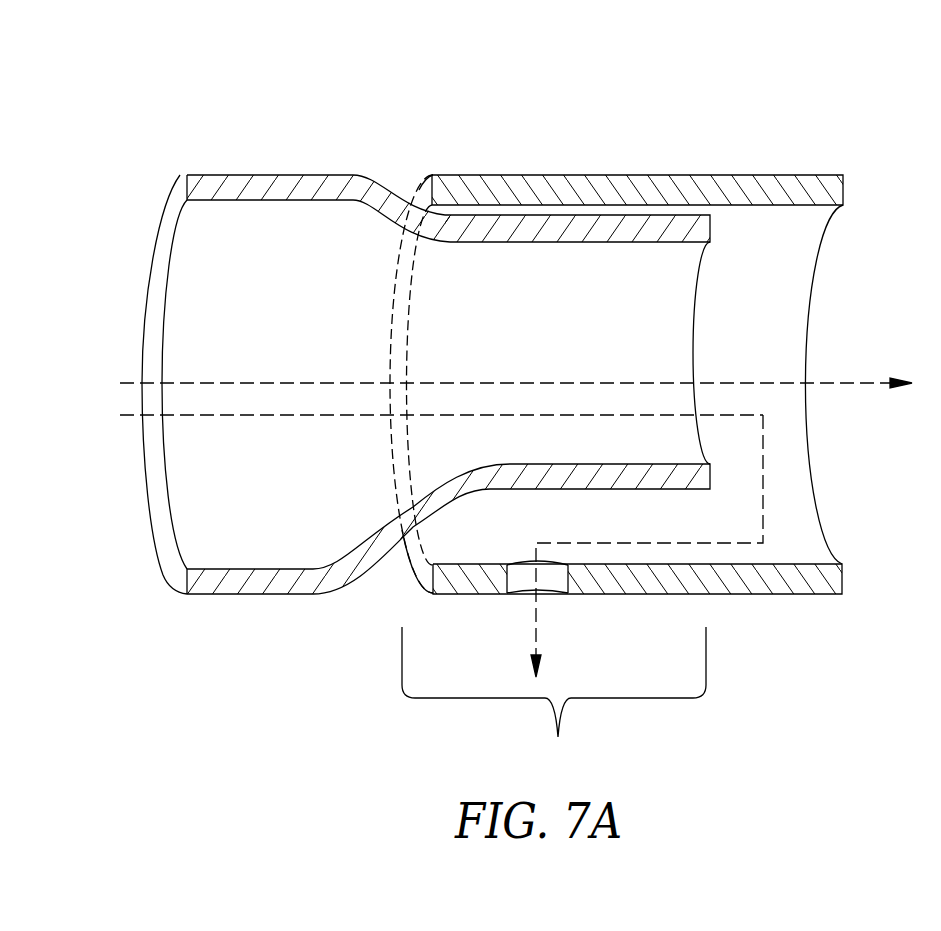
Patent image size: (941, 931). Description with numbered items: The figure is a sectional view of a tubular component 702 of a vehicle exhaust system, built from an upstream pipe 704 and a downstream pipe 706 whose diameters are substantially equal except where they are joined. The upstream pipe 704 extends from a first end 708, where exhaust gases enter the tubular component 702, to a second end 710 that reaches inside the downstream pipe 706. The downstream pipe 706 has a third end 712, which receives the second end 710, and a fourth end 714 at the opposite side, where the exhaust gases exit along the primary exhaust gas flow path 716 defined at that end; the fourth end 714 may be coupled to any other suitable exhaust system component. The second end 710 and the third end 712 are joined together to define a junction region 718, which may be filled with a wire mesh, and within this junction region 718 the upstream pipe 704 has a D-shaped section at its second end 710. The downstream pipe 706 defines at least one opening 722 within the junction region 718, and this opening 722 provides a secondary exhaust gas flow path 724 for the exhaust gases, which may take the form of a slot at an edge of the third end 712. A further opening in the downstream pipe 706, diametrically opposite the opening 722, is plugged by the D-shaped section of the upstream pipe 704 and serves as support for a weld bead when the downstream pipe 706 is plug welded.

The tubular component 702 is at (758, 73).
The upstream pipe 704 is at (311, 366).
The downstream pipe 706 is at (653, 421).
The first end 708 is at (136, 450).
The second end 710 is at (712, 433).
The third end 712 is at (410, 170).
The fourth end 714 is at (830, 250).
The primary exhaust gas flow path 716 is at (862, 383).
The junction region 718 is at (554, 699).
The opening 722 is at (555, 586).
The secondary exhaust gas flow path 724 is at (536, 640).